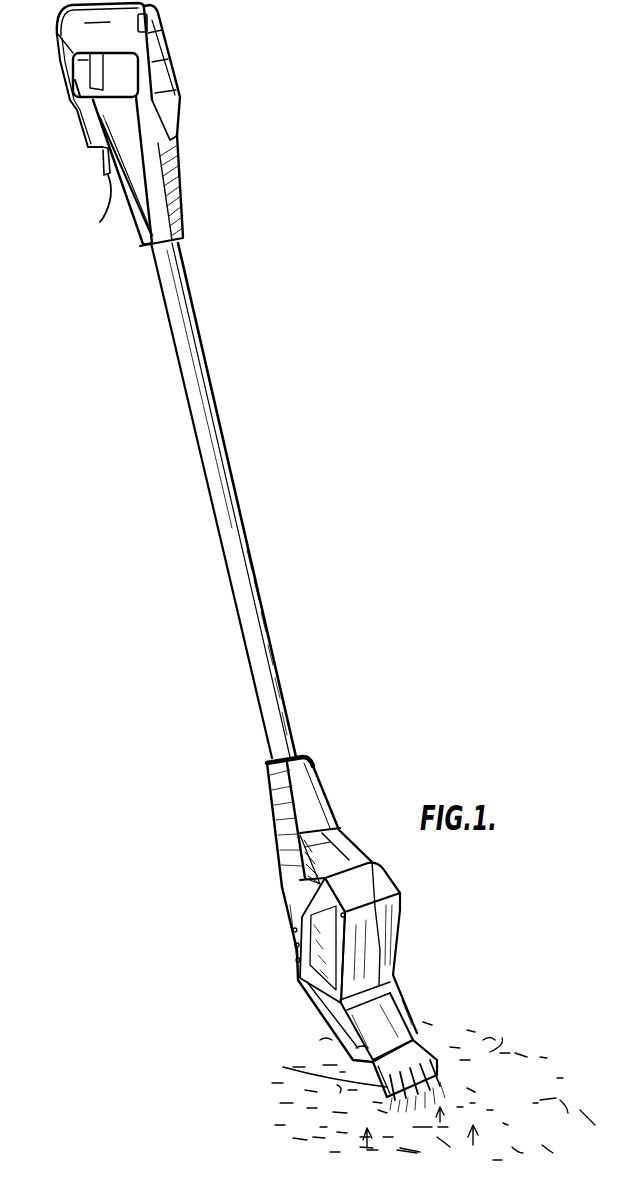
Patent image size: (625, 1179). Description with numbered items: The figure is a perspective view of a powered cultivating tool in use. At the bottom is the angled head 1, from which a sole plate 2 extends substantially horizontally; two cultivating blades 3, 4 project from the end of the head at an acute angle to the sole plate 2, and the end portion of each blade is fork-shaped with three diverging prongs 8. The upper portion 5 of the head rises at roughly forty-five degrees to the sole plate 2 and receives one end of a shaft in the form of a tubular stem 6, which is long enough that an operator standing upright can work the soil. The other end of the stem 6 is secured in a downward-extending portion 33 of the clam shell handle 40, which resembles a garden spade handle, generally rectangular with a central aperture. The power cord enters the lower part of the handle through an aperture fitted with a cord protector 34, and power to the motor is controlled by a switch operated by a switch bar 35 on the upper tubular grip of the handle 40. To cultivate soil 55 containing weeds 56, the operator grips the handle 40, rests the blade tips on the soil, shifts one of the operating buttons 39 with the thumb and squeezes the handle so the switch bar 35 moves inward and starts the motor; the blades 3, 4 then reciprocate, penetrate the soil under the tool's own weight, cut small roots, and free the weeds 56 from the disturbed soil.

The angled head 1 is at (413, 912).
The sole plate 2 is at (299, 987).
The cultivating blade 3 is at (373, 1067).
The cultivating blade 4 is at (432, 1065).
The upper portion of the head 5 is at (315, 783).
The tubular stem 6 is at (218, 456).
The prongs 8 is at (320, 1076).
The downward-extending portion 33 is at (138, 230).
The cord protector 34 is at (102, 160).
The switch bar 35 is at (107, 60).
The operating button 39 is at (154, 20).
The handle 40 is at (118, 75).
The soil 55 is at (500, 1055).
The weeds 56 is at (485, 1085).